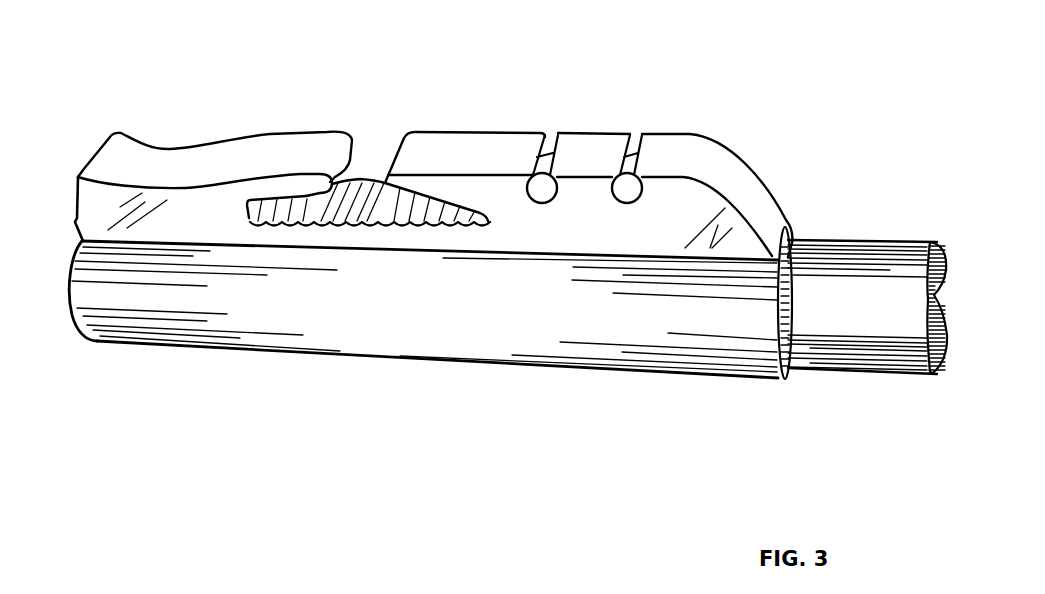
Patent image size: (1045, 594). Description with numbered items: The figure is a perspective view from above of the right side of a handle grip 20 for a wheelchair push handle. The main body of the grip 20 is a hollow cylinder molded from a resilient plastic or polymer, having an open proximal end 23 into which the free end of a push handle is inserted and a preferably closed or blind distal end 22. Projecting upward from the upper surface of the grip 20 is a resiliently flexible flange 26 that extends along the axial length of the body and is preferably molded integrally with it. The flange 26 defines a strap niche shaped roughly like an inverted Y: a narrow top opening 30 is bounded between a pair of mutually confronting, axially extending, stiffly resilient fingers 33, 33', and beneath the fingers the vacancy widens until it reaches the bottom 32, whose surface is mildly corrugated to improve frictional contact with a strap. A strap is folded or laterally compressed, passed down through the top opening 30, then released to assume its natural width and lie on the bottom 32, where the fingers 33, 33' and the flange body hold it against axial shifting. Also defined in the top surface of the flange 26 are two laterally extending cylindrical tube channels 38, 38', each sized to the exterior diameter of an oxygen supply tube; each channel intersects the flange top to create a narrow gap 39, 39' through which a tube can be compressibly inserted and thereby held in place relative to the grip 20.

The handle grip 20 is at (184, 405).
The distal end 22 is at (70, 307).
The open proximal end 23 is at (790, 372).
The flange 26 is at (747, 193).
The top opening 30 is at (367, 163).
The bottom of the niche 32 is at (367, 223).
The finger 33 is at (215, 143).
The finger 33' is at (465, 137).
The tube channel 38 is at (566, 202).
The tube channel 38' is at (656, 200).
The gap 39 is at (569, 122).
The gap 39' is at (659, 122).